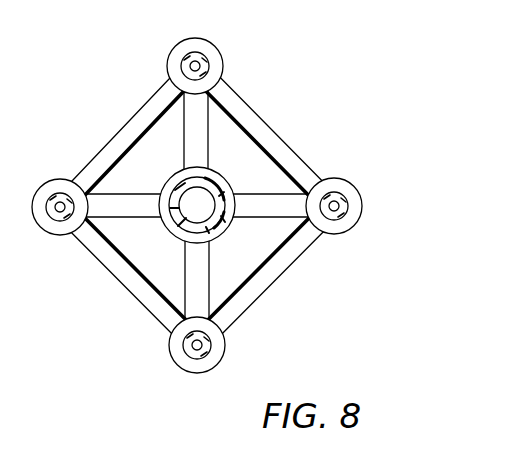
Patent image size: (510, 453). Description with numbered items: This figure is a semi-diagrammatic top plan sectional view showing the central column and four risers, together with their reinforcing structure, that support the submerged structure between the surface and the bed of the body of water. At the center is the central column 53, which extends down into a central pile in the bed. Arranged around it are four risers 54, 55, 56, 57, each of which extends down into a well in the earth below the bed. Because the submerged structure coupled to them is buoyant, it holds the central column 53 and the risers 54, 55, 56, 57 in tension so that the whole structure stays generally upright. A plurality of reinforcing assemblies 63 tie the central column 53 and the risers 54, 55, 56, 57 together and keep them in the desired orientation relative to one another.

The central column 53 is at (214, 186).
The riser 54 is at (338, 194).
The riser 55 is at (211, 58).
The riser 56 is at (60, 195).
The riser 57 is at (210, 350).
The reinforcing assemblies 63 is at (270, 116).